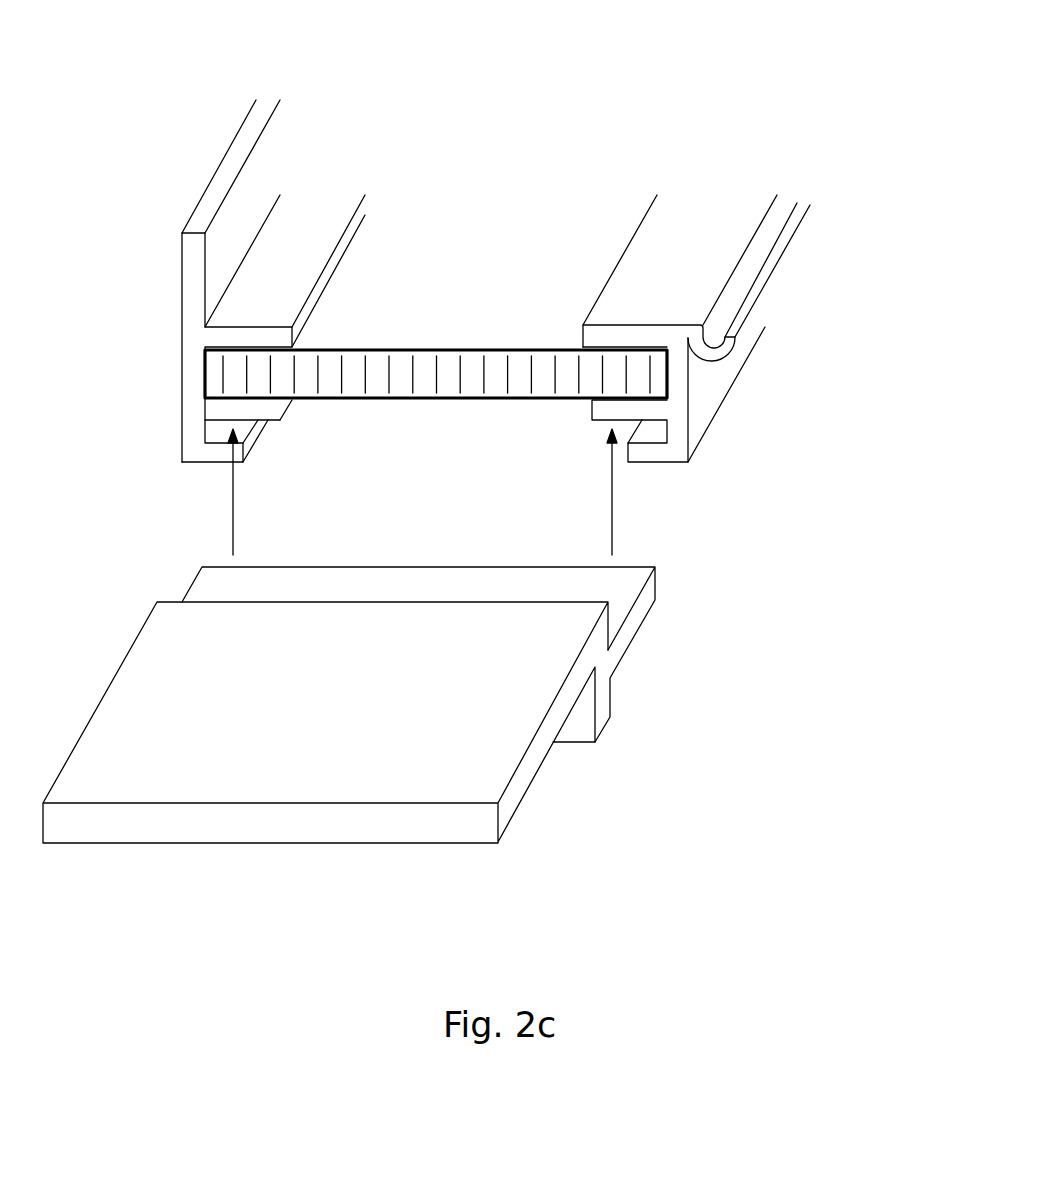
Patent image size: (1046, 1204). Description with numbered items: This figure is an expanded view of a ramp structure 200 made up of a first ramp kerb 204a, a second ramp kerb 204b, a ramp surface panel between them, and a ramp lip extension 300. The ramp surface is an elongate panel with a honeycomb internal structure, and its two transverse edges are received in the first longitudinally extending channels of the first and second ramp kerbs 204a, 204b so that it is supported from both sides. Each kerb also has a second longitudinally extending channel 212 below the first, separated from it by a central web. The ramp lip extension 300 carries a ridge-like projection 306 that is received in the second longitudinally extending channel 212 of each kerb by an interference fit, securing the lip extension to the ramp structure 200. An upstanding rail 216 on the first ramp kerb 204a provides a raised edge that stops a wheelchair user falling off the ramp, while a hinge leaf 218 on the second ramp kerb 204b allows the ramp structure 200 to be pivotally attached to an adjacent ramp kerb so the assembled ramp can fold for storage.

The ramp structure 200 is at (463, 288).
The first ramp kerb 204a is at (193, 305).
The second ramp kerb 204b is at (715, 417).
The second longitudinally extending channel 212 is at (628, 438).
The upstanding rail 216 is at (210, 200).
The hinge leaf 218 is at (765, 297).
The ramp lip extension 300 is at (415, 705).
The ridge-like projection 306 is at (650, 610).